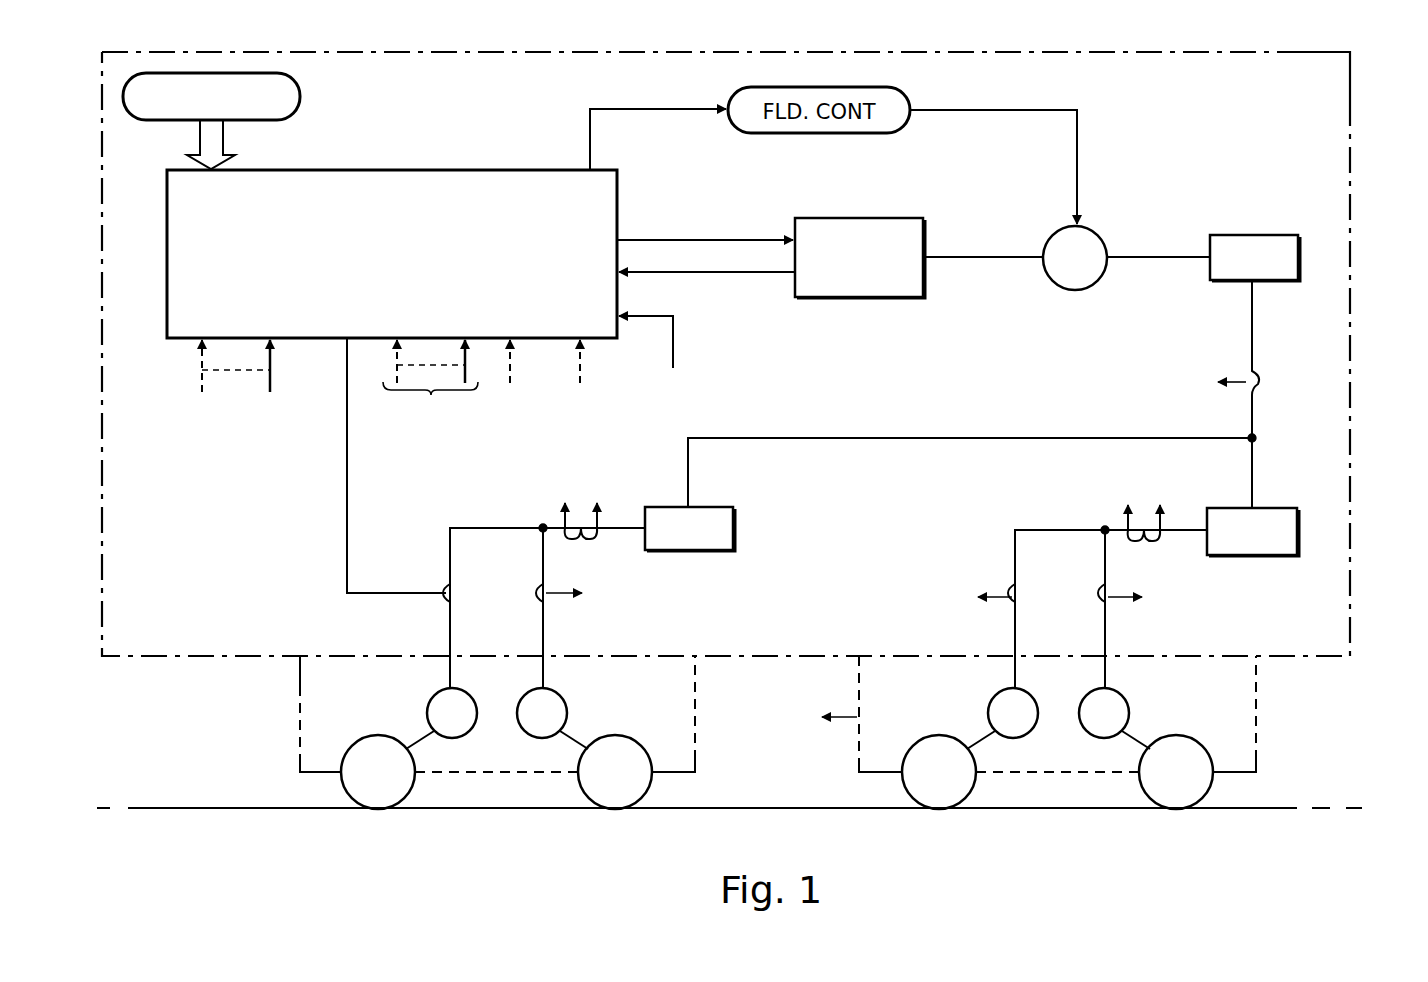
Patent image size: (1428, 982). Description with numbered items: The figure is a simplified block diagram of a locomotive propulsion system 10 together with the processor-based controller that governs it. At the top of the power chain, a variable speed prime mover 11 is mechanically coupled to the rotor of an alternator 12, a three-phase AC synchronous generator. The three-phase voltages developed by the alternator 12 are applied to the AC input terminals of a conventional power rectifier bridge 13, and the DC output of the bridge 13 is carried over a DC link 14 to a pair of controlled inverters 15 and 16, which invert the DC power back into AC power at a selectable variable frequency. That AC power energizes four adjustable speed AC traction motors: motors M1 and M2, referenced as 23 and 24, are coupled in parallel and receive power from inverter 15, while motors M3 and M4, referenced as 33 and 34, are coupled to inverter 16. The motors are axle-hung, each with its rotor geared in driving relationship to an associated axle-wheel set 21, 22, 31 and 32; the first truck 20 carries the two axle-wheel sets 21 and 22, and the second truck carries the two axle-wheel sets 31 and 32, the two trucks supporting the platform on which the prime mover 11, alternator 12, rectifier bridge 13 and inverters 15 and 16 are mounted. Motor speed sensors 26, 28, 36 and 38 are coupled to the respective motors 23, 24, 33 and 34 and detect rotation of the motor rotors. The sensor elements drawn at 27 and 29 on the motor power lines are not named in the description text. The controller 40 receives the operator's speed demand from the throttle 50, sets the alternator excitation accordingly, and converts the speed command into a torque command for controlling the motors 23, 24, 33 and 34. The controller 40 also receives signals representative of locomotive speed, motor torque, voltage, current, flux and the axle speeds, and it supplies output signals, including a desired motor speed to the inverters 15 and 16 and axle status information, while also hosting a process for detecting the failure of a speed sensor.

The locomotive propulsion system 10 is at (1352, 92).
The variable speed prime mover 11 is at (872, 218).
The alternator 12 is at (1104, 242).
The power rectifier bridge 13 is at (1266, 235).
The DC link 14 is at (1254, 320).
The inverter 15 is at (676, 551).
The inverter 16 is at (1233, 556).
The truck 20 is at (298, 686).
The axle-wheel set 21 is at (412, 796).
The axle-wheel set 22 is at (650, 796).
The traction motor M1 23 is at (427, 704).
The traction motor M2 24 is at (567, 708).
The motor speed sensor 26 is at (420, 745).
The current sensor 27 is at (537, 591).
The motor speed sensor 28 is at (577, 755).
The voltage sensor 29 is at (600, 521).
The axle-wheel set 31 is at (972, 796).
The axle-wheel set 32 is at (1208, 796).
The traction motor M3 33 is at (988, 700).
The traction motor M4 34 is at (1125, 702).
The motor speed sensor 36 is at (982, 745).
The motor speed sensor 38 is at (1123, 760).
The controller 40 is at (618, 180).
The throttle 50 is at (302, 98).